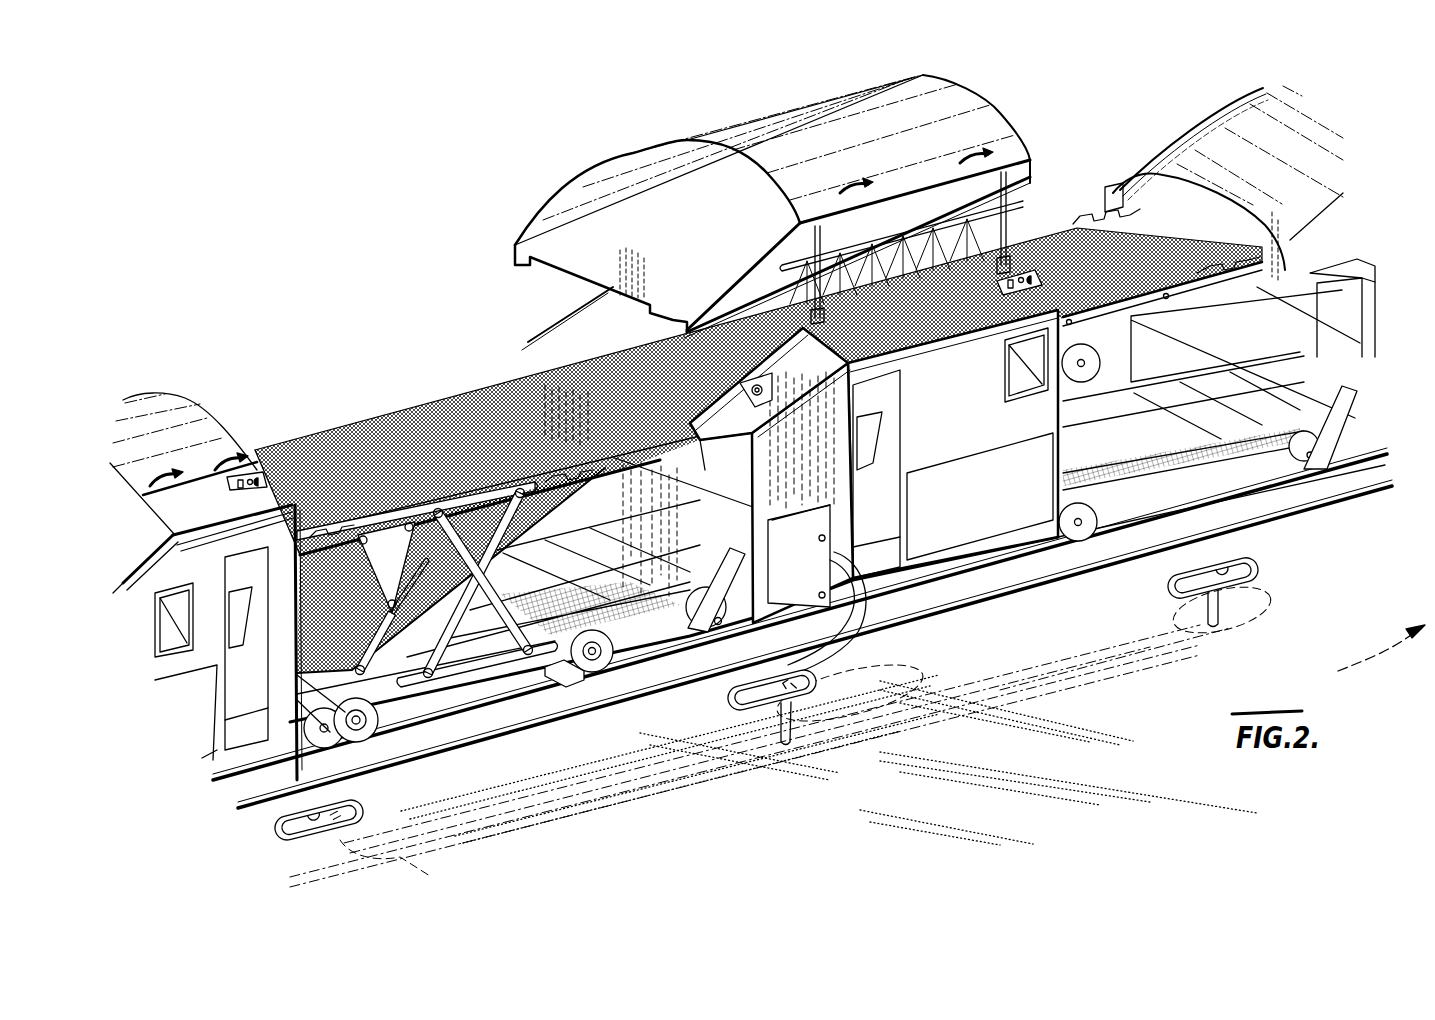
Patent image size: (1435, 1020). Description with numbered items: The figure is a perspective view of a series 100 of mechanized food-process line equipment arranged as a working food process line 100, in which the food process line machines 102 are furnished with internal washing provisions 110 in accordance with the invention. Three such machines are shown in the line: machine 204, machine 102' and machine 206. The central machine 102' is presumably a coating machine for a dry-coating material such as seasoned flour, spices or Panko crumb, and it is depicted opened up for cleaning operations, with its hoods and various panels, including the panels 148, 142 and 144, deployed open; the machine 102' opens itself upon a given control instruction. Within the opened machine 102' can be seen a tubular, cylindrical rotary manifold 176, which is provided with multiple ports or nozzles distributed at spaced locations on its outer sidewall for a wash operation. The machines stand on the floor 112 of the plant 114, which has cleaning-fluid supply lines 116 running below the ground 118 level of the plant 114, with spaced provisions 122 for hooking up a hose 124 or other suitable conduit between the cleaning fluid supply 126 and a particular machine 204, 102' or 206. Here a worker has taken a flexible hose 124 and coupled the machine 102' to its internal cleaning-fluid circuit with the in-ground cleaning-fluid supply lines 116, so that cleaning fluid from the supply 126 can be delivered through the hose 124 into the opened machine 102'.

The food process line 100 is at (767, 461).
The plant 114 is at (767, 461).
The food process line machines 102 is at (758, 318).
The internal washing provisions 110 is at (1056, 210).
The coating machine 102' is at (772, 204).
The roof covering 148 is at (772, 204).
The roof panel 142 is at (772, 204).
The roof panel 144 is at (907, 233).
The tubular rotary manifold 176 is at (930, 227).
The food process line machine 204 is at (1233, 103).
The food process line machine 206 is at (177, 410).
The hose 124 is at (868, 628).
The spaced provisions 122 is at (875, 693).
The floor 112 is at (620, 773).
The cleaning-fluid supply lines 116 is at (1102, 675).
The ground 118 is at (610, 864).
The cleaning fluid supply 126 is at (1338, 671).